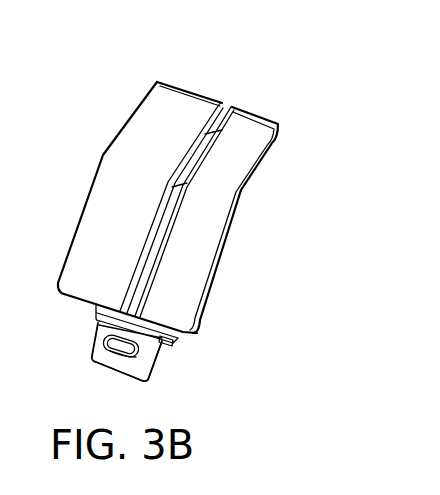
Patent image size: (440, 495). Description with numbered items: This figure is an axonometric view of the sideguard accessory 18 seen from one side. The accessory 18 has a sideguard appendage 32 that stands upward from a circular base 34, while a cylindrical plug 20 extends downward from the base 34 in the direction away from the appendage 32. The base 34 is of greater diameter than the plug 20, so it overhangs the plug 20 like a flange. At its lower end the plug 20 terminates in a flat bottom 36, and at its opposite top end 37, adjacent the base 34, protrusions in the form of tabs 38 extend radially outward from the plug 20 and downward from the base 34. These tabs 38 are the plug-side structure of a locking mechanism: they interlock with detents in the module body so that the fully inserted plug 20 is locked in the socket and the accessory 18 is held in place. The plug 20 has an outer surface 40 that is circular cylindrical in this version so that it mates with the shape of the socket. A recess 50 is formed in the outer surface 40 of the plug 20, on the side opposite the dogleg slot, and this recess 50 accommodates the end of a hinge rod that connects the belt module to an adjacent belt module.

The accessory 18 is at (242, 71).
The sideguard appendage 32 is at (207, 257).
The circular base 34 is at (97, 315).
The plug 20 is at (153, 365).
The flat bottom 36 is at (131, 376).
The top end 37 is at (147, 343).
The tabs 38 is at (164, 341).
The outer surface 40 is at (113, 363).
The recess 50 is at (100, 344).